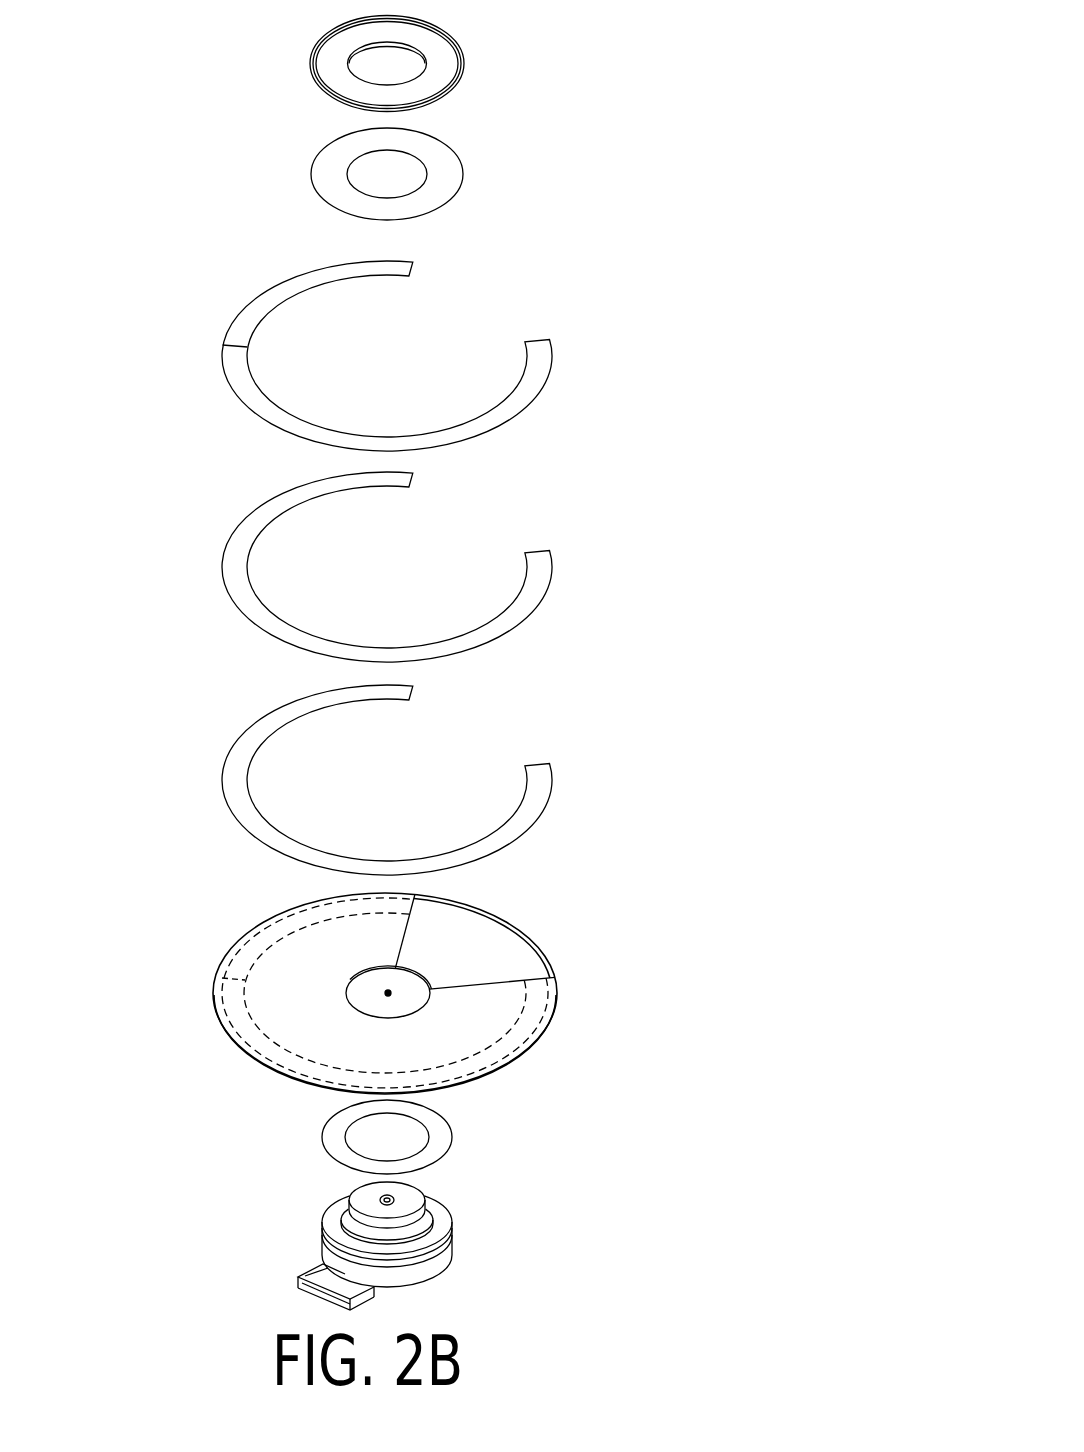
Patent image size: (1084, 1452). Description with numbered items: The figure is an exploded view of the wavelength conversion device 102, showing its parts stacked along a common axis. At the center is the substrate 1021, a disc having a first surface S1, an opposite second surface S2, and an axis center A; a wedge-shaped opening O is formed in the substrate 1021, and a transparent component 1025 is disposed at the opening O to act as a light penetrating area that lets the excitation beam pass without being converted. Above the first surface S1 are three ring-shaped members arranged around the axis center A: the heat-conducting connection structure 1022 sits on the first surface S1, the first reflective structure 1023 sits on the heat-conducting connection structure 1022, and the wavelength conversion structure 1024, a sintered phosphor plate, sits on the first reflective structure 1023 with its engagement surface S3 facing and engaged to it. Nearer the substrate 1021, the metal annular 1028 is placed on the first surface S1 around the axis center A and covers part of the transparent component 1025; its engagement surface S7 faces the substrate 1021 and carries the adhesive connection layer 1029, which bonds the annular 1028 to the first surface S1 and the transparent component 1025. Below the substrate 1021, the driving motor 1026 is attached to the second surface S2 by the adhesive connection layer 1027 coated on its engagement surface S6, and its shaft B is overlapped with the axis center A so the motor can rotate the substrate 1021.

The wavelength conversion device 102 is at (150, 80).
The annular 1028 is at (511, 77).
The engagement surface S7 is at (448, 95).
The connection layer 1029 is at (445, 175).
The wavelength conversion structure 1024 is at (509, 356).
The engagement surface S3 is at (532, 402).
The first reflective structure 1023 is at (533, 585).
The heat-conducting connection structure 1022 is at (533, 797).
The substrate 1021 is at (527, 990).
The opening O is at (510, 930).
The axis center A is at (392, 995).
The first surface S1 is at (535, 1002).
The second surface S2 is at (532, 1052).
The transparent component 1025 is at (418, 952).
The connection layer 1027 is at (435, 1137).
The driving motor 1026 is at (485, 1246).
The shaft B is at (392, 1200).
The engagement surface S6 is at (436, 1231).